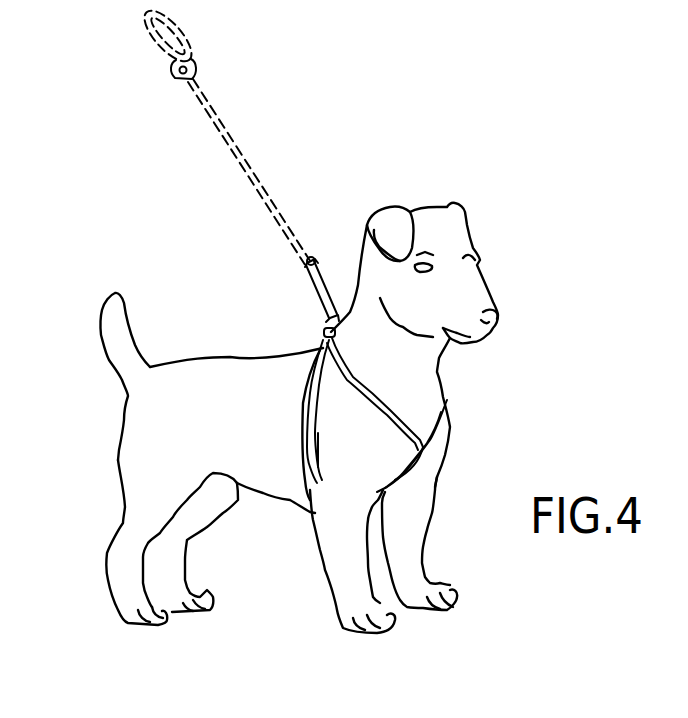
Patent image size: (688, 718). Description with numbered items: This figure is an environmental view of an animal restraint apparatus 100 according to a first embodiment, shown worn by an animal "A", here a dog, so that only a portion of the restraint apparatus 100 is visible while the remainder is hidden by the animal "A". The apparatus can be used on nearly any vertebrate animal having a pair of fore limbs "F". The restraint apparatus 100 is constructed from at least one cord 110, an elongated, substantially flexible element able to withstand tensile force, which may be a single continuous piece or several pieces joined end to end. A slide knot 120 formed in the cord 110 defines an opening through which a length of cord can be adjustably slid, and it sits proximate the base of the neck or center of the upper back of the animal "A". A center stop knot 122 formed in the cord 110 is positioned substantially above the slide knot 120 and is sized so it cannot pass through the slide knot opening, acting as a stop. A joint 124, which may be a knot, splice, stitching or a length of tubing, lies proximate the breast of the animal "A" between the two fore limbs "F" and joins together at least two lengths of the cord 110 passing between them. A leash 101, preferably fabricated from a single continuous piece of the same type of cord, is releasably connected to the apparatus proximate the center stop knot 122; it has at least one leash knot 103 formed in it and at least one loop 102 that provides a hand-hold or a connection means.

The animal restraint apparatus 100 is at (148, 234).
The leash 101 is at (232, 132).
The loop 102 is at (153, 45).
The leash knot 103 is at (205, 66).
The cord 110 is at (312, 292).
The slide knot 120 is at (325, 330).
The center stop knot 122 is at (310, 261).
The joint 124 is at (413, 470).
The animal A is at (477, 299).
The fore limbs F is at (343, 552).